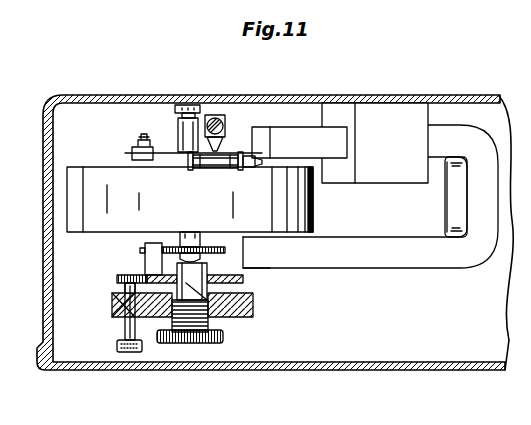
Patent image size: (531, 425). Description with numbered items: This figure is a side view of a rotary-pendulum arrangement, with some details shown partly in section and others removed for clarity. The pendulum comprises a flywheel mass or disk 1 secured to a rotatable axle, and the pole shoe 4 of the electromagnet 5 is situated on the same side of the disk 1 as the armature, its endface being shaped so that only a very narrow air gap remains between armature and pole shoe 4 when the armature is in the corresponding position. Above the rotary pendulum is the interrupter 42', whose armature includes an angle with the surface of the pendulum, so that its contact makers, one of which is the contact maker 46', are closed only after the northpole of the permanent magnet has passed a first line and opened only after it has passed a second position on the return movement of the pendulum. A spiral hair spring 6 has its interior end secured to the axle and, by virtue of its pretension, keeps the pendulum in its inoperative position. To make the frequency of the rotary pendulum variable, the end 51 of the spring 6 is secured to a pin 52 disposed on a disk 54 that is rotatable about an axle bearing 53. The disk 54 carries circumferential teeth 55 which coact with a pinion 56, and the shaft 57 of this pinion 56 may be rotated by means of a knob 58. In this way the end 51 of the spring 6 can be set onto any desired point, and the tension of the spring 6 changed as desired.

The flywheel mass or disk 1 is at (93, 198).
The pole shoe 4 is at (280, 138).
The electromagnet 5 is at (385, 125).
The spiral hair spring 6 is at (217, 245).
The interrupter 42' is at (211, 181).
The contact maker 46' is at (243, 182).
The end of spring 51 is at (140, 251).
The pin 52 is at (152, 261).
The axle bearing 53 is at (253, 315).
The disk 54 is at (236, 273).
The circumferential teeth 55 is at (243, 280).
The pinion 56 is at (118, 279).
The shaft 57 is at (125, 306).
The knob 58 is at (137, 352).